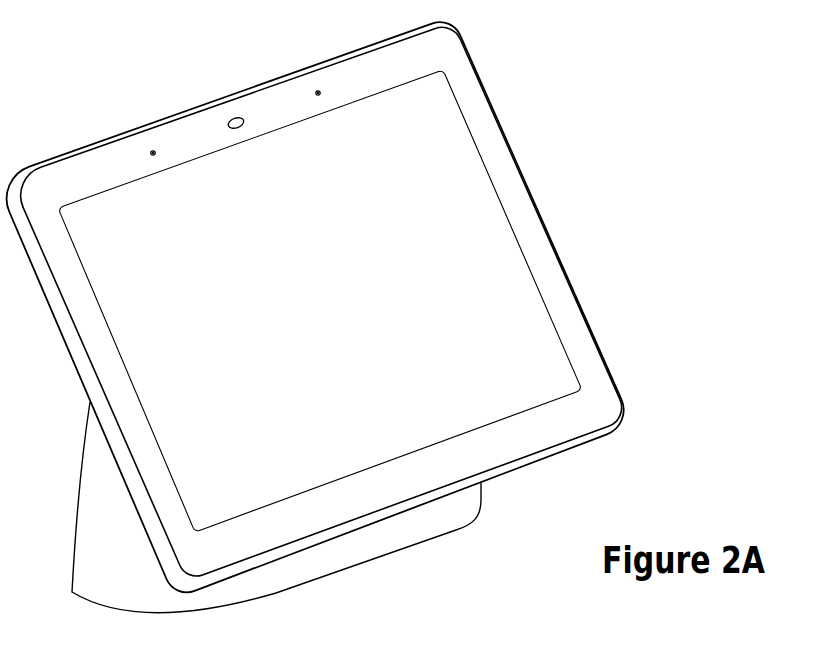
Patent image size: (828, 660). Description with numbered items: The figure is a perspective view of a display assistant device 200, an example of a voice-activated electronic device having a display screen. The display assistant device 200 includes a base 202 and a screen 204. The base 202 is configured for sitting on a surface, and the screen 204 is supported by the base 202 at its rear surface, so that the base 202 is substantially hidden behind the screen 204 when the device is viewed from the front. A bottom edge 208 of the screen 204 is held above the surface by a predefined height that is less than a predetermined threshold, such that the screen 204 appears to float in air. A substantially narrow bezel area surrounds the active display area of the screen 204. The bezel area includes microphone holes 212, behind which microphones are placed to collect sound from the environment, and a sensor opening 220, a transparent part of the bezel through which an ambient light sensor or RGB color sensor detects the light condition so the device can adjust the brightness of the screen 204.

The display assistant device 200 is at (582, 101).
The base 202 is at (145, 578).
The screen 204 is at (343, 316).
The bottom edge 208 is at (583, 439).
The microphone holes 212 is at (152, 150).
The sensor opening 220 is at (227, 117).